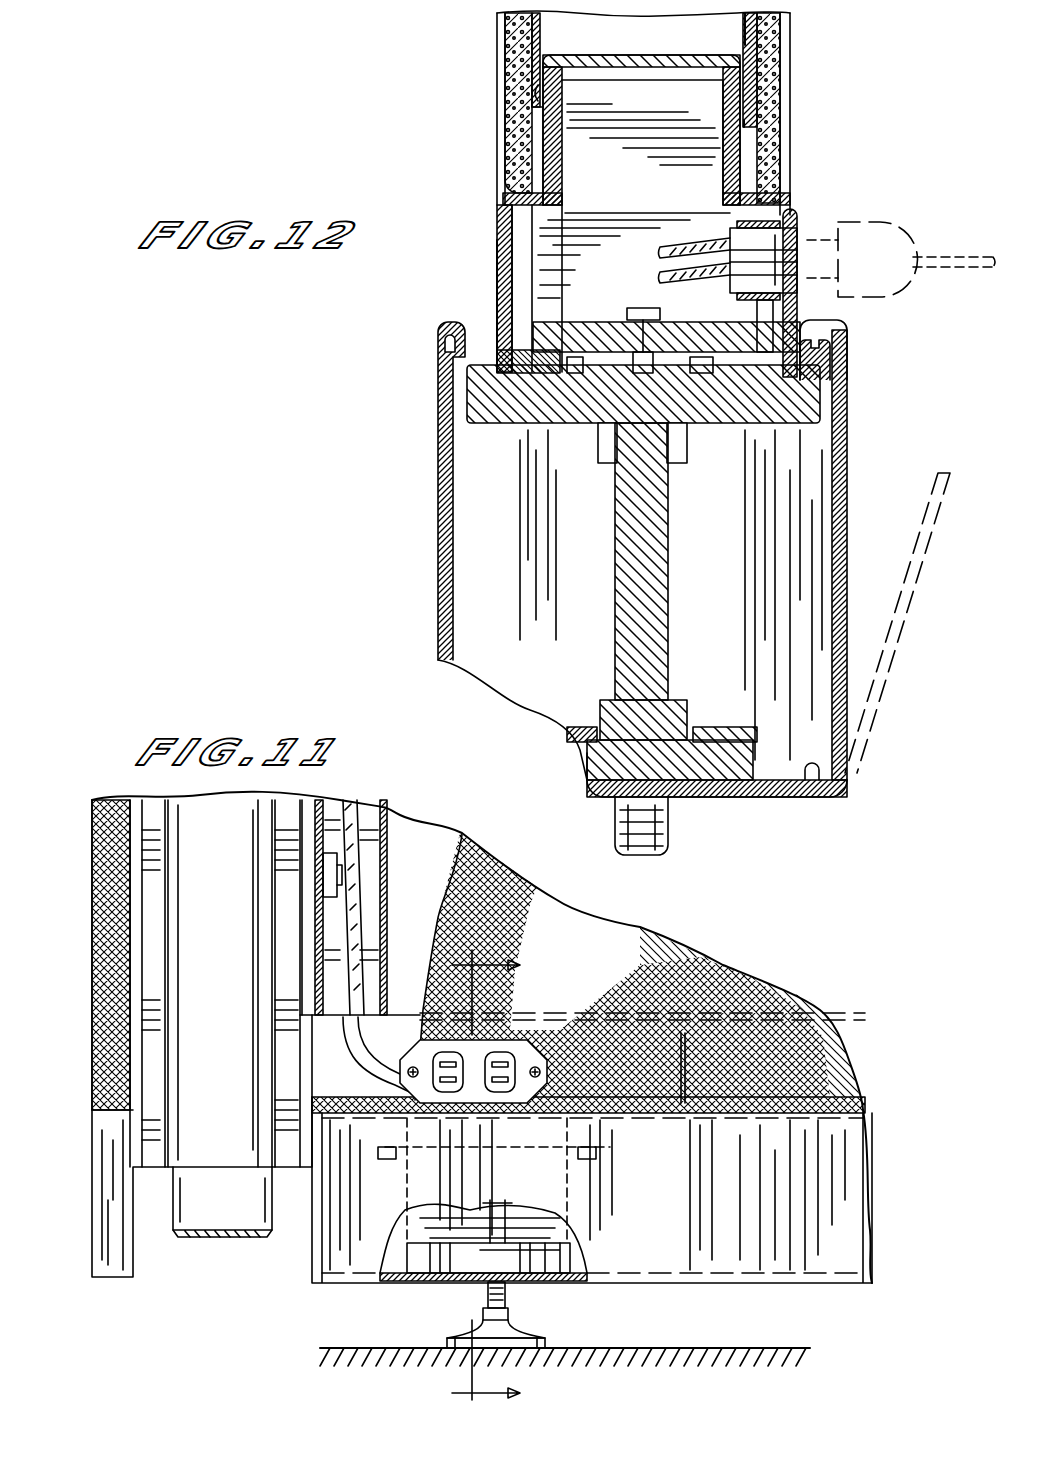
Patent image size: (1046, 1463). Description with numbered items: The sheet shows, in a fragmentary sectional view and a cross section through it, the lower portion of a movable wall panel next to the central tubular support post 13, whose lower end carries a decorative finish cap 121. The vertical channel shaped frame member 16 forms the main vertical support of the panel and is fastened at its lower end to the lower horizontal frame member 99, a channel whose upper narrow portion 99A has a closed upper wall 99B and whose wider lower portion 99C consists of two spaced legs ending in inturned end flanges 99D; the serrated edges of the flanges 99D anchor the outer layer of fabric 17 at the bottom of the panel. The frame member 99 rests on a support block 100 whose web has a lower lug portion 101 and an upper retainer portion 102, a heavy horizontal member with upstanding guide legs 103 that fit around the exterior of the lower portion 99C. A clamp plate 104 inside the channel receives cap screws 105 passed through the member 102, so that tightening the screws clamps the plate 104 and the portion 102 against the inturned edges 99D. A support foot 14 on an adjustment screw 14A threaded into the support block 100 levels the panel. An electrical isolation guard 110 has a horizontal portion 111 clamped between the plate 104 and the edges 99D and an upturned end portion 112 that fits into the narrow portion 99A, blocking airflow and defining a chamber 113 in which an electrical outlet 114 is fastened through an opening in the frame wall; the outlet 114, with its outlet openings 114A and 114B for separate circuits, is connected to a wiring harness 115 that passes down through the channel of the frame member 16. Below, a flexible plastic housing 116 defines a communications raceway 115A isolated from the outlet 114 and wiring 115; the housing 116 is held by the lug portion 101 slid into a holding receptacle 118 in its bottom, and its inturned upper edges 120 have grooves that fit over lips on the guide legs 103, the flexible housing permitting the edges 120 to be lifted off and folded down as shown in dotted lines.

In FIG. 11, the central tubular support post 13 is at (235, 857).
In FIG. 11, the support foot 14 is at (520, 1315).
In FIG. 12, the adjustment screw 14A is at (670, 835).
In FIG. 11, the vertical channel shaped frame member 16 is at (385, 890).
In FIG. 12, the fabric cover 17 is at (502, 42).
In FIG. 11, the fabric cover 17 is at (755, 985).
In FIG. 12, the lower horizontal frame member 99 is at (505, 200).
In FIG. 11, the lower horizontal frame member 99 is at (380, 1030).
In FIG. 12, the upper narrow portion 99A is at (740, 162).
In FIG. 12, the closed upper wall 99B is at (748, 48).
In FIG. 12, the wider lower portion 99C is at (497, 282).
In FIG. 12, the inturned end flanges 99D is at (522, 375).
In FIG. 12, the support block 100 is at (645, 600).
In FIG. 11, the support block 100 is at (515, 1225).
In FIG. 12, the lower lug portion 101 is at (730, 760).
In FIG. 12, the upper retainer portion 102 is at (792, 335).
In FIG. 12, the upstanding guide legs 103 is at (480, 400).
In FIG. 12, the clamp plate 104 is at (562, 315).
In FIG. 12, the cap screw 105 is at (640, 352).
In FIG. 12, the electrical isolation guard 110 is at (542, 230).
In FIG. 11, the electrical isolation guard 110 is at (635, 1120).
In FIG. 12, the horizontal portion 111 is at (700, 390).
In FIG. 12, the upturned end portion 112 is at (620, 100).
In FIG. 11, the upturned end portion 112 is at (690, 1085).
In FIG. 11, the chamber 113 is at (605, 1040).
In FIG. 12, the electrical outlet 114 is at (775, 245).
In FIG. 11, the electrical outlet 114 is at (515, 1040).
In FIG. 11, the outlet opening 114A is at (408, 1072).
In FIG. 11, the outlet opening 114B is at (505, 1072).
In FIG. 11, the wiring harness 115 is at (345, 832).
In FIG. 12, the communications raceway 115A is at (805, 560).
In FIG. 12, the flexible plastic housing 116 is at (932, 482).
In FIG. 11, the flexible plastic housing 116 is at (840, 1232).
In FIG. 12, the holding receptacle 118 is at (695, 740).
In FIG. 11, the holding receptacle 118 is at (430, 1262).
In FIG. 12, the inturned edges 120 is at (455, 322).
In FIG. 11, the inturned edges 120 is at (830, 1113).
In FIG. 11, the finish cap 121 is at (235, 1205).